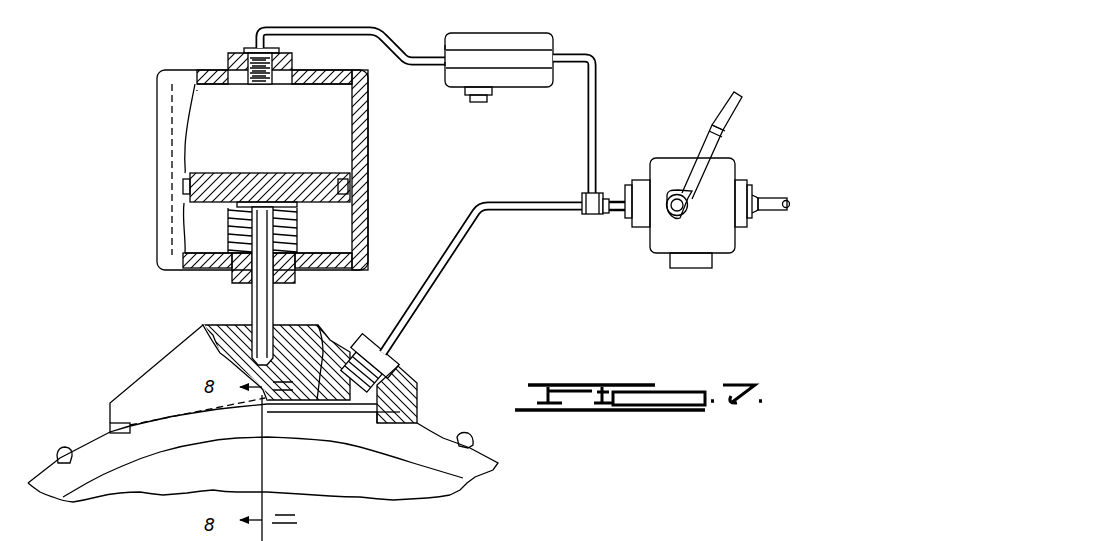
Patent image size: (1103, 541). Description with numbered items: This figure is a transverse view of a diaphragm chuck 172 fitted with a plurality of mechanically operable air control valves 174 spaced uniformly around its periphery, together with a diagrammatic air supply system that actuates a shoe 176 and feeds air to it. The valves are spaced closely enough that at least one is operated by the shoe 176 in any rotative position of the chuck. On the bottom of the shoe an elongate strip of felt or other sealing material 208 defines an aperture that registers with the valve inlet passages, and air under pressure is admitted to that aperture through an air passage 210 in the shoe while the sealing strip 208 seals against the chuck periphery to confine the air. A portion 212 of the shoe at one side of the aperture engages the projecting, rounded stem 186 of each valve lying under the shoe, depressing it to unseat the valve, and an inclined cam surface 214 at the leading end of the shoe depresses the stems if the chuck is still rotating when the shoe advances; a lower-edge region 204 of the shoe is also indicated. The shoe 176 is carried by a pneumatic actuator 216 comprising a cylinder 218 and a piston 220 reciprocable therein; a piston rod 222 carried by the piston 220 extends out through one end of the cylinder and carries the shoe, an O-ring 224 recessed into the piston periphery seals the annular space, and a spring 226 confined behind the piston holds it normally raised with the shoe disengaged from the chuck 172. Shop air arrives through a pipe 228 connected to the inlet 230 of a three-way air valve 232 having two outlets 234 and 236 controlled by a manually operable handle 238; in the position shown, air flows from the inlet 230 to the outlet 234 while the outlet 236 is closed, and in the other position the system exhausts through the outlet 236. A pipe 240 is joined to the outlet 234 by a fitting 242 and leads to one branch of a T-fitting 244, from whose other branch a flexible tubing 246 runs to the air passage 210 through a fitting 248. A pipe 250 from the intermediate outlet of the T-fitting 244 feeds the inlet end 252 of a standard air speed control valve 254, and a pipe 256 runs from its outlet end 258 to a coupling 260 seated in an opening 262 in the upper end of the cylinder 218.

The diaphragm chuck 172 is at (465, 491).
The air control valves 174 is at (500, 443).
The shoe 176 is at (425, 373).
The valve stem 186 is at (74, 457).
The member 204 is at (476, 539).
The sealing strip 208 is at (372, 413).
The air passage 210 is at (360, 398).
The portion of the shoe 212 is at (291, 539).
The inclined cam surface 214 is at (124, 430).
The pneumatic actuator 216 is at (372, 146).
The cylinder 218 is at (358, 210).
The piston 220 is at (232, 121).
The piston rod 222 is at (275, 310).
The O-ring 224 is at (357, 188).
The spring 226 is at (300, 232).
The pipe 228 is at (766, 196).
The inlet 230 is at (750, 179).
The three-way air valve 232 is at (672, 158).
The outlet 234 is at (637, 180).
The outlet 236 is at (681, 262).
The handle 238 is at (729, 118).
The pipe 240 is at (608, 214).
The fitting 242 is at (620, 222).
The T-fitting 244 is at (584, 210).
The flexible tubing 246 is at (488, 198).
The fitting 248 is at (367, 340).
The pipe 250 is at (597, 88).
The inlet end 252 is at (555, 58).
The air speed control valve 254 is at (516, 36).
The pipe 256 is at (388, 34).
The outlet end 258 is at (444, 76).
The coupling 260 is at (246, 47).
The opening 262 is at (264, 84).